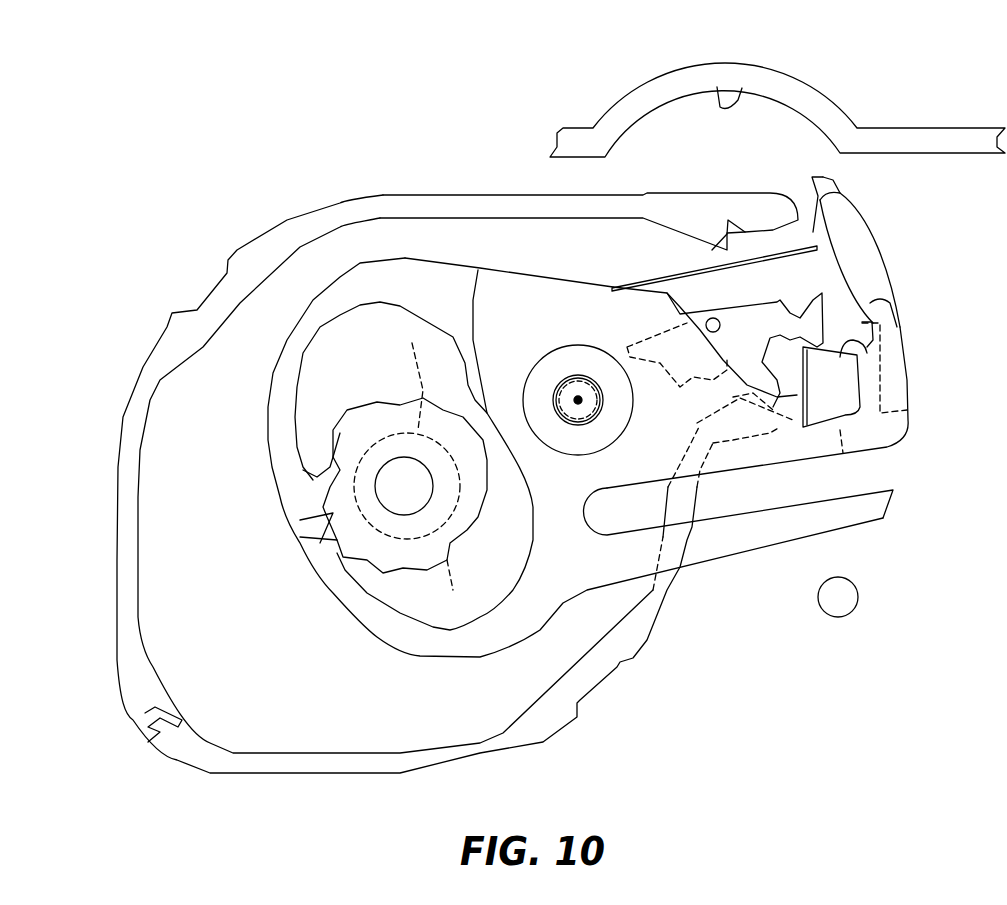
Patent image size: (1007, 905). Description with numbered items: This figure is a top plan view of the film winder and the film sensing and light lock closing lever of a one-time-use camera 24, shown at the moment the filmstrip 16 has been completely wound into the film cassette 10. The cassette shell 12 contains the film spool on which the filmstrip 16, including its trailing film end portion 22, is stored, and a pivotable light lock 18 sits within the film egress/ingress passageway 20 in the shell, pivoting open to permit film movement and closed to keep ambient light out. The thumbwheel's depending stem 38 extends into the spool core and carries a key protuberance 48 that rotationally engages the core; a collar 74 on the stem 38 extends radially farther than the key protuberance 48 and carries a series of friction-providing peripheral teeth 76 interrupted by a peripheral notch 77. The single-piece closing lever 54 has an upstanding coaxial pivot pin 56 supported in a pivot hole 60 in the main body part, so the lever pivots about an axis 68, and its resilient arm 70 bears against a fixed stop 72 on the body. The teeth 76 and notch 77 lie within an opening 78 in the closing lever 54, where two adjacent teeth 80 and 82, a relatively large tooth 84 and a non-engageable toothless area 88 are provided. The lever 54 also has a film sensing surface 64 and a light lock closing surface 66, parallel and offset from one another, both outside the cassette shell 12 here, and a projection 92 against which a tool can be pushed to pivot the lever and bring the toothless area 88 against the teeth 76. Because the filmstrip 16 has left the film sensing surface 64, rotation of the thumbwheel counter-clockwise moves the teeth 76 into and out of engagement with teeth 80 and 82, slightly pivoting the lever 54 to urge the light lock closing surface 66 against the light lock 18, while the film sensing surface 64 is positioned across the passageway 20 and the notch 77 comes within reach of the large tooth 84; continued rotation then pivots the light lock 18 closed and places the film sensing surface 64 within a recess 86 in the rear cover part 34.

The film cassette 10 is at (543, 744).
The cassette shell 12 is at (408, 775).
The filmstrip 16 is at (646, 277).
The light lock 18 is at (753, 310).
The film egress/ingress passageway 20 is at (813, 232).
The trailing film end portion 22 is at (685, 275).
The one-time-use camera 24 is at (185, 170).
The rear cover part 34 is at (630, 90).
The depending stem 38 is at (412, 343).
The key protuberance 48 is at (452, 587).
The closing lever 54 is at (405, 258).
The pivot pin 56 is at (567, 390).
The pivot hole 60 is at (583, 373).
The film sensing surface 64 is at (823, 177).
The light lock closing surface 66 is at (870, 348).
The axis 68 is at (580, 400).
The resilient arm 70 is at (887, 518).
The fixed stop 72 is at (858, 597).
The collar 74 is at (455, 417).
The peripheral teeth 76 is at (495, 500).
The peripheral notch 77 is at (333, 520).
The opening 78 is at (357, 343).
The tooth 80 is at (323, 540).
The tooth 82 is at (347, 567).
The large tooth 84 is at (313, 480).
The recess 86 is at (718, 85).
The toothless area 88 is at (455, 612).
The projection 92 is at (876, 305).